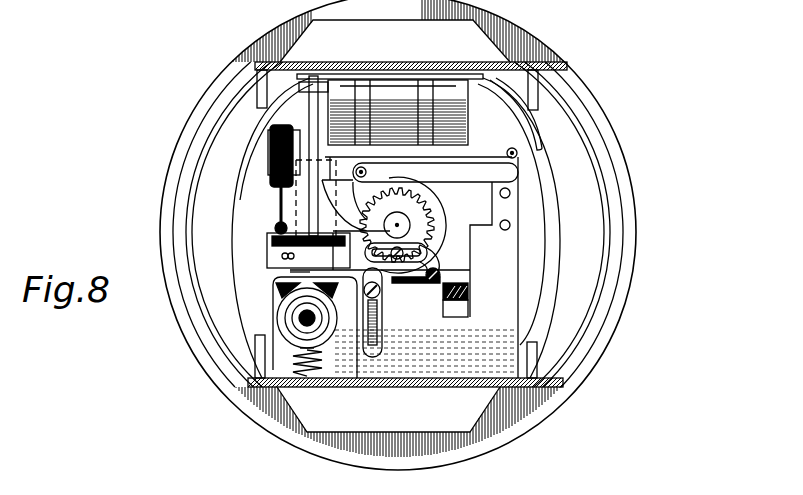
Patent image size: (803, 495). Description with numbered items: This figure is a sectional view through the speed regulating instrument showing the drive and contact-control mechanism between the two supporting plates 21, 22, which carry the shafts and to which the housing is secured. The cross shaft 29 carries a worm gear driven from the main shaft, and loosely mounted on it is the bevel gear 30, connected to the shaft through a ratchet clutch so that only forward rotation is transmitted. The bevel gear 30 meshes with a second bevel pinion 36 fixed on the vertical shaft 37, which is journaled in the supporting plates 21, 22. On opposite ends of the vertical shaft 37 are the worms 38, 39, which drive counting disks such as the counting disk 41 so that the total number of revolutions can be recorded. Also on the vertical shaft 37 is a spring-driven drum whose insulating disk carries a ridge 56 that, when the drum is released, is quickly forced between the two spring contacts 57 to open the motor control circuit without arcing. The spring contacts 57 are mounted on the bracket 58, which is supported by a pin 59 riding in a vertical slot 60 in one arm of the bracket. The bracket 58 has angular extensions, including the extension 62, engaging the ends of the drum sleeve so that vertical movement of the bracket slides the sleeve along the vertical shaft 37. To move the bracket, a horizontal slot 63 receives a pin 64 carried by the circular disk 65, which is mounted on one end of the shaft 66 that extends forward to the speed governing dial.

The supporting plate 21 is at (430, 388).
The supporting plate 22 is at (470, 63).
The cross shaft 29 is at (300, 318).
The bevel gear 30 is at (288, 307).
The bevel pinion 36 is at (293, 273).
The vertical shaft 37 is at (318, 152).
The worm 38 is at (316, 365).
The worm 39 is at (258, 107).
The counting disk 41 is at (455, 140).
The insulating ridge 56 is at (276, 228).
The spring contacts 57 is at (282, 193).
The bracket 58 is at (292, 208).
The pin 59 is at (383, 296).
The vertical slot 60 is at (385, 338).
The angular extension 62 is at (272, 270).
The horizontal slot 63 is at (410, 257).
The pin 64 is at (440, 276).
The circular disk 65 is at (415, 218).
The shaft 66 is at (270, 182).